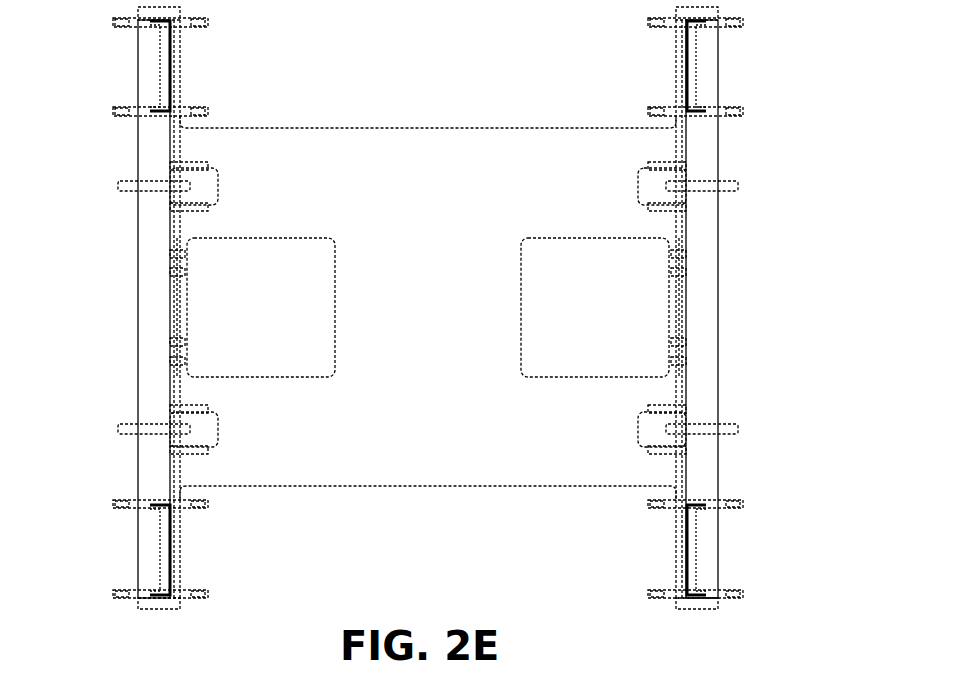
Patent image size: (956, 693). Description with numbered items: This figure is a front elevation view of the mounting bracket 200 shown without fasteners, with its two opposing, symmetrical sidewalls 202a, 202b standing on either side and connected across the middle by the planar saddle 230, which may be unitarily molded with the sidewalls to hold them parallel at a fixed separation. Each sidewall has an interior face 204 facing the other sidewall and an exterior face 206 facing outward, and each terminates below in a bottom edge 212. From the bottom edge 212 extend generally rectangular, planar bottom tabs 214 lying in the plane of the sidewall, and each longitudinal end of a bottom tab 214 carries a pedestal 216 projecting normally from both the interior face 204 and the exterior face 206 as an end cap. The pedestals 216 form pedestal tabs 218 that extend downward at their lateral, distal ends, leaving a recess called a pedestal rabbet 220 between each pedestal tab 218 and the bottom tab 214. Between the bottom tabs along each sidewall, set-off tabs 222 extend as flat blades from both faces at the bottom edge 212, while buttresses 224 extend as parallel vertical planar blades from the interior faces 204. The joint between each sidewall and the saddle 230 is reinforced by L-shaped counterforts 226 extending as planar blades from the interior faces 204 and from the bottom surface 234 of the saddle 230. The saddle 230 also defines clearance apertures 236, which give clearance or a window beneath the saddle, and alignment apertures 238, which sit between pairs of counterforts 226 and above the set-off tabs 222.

The mounting bracket 200 is at (497, 72).
The sidewall 202a is at (138, 325).
The sidewall 202b is at (718, 310).
The interior face 204 is at (179, 229).
The exterior face 206 is at (136, 474).
The bottom edge 212 is at (706, 222).
The bottom tab 214 is at (165, 72).
The pedestal 216 is at (198, 18).
The pedestal tab 218 is at (120, 506).
The pedestal rabbet 220 is at (150, 147).
The set-off tab 222 is at (120, 186).
The buttress 224 is at (170, 253).
The counterfort 226 is at (197, 162).
The saddle 230 is at (367, 128).
The bottom surface 234 is at (433, 490).
The clearance aperture 236 is at (272, 236).
The alignment aperture 238 is at (222, 186).